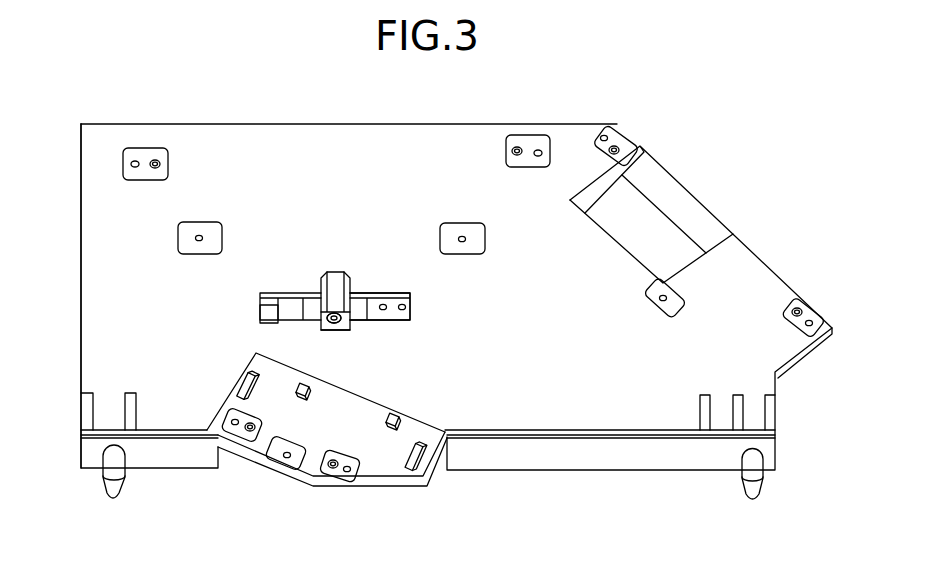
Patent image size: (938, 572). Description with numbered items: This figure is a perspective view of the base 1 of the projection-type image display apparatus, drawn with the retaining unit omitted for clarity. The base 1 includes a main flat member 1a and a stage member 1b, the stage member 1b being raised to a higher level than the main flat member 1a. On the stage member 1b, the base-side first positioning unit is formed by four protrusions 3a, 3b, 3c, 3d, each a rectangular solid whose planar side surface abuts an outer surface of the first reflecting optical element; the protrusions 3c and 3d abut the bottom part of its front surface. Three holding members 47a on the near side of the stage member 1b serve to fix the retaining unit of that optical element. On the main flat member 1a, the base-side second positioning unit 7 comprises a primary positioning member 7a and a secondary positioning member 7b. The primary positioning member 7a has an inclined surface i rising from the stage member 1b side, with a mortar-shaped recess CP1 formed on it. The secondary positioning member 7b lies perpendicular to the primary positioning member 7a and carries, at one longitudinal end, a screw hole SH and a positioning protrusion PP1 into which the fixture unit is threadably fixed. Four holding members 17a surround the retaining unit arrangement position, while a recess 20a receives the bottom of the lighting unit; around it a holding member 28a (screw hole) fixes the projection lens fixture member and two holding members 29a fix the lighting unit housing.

The base 1 is at (709, 99).
The main flat member 1a is at (100, 301).
The stage member 1b is at (382, 455).
The protrusion 3a is at (237, 382).
The protrusion 3b is at (421, 470).
The protrusion 3c is at (306, 385).
The protrusion 3d is at (400, 416).
The base-side second positioning unit 7 is at (364, 282).
The primary positioning member 7a is at (334, 281).
The secondary positioning member 7b is at (283, 292).
The holding member 17a is at (148, 148).
The recess 20a is at (637, 220).
The holding member 28a is at (662, 312).
The holding member 29a is at (617, 136).
The holding member 47a is at (240, 430).
The positioning protrusion PP1 is at (385, 305).
The screw hole SH is at (411, 304).
The mortar-shaped recess CP1 is at (337, 323).
The inclined surface i is at (322, 327).